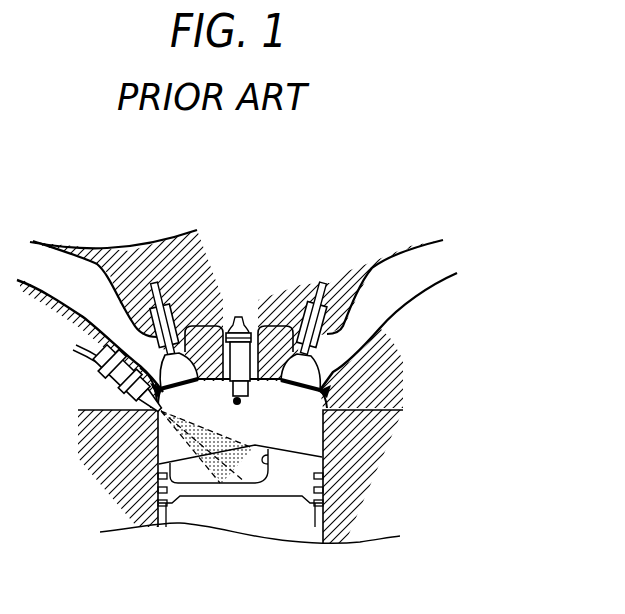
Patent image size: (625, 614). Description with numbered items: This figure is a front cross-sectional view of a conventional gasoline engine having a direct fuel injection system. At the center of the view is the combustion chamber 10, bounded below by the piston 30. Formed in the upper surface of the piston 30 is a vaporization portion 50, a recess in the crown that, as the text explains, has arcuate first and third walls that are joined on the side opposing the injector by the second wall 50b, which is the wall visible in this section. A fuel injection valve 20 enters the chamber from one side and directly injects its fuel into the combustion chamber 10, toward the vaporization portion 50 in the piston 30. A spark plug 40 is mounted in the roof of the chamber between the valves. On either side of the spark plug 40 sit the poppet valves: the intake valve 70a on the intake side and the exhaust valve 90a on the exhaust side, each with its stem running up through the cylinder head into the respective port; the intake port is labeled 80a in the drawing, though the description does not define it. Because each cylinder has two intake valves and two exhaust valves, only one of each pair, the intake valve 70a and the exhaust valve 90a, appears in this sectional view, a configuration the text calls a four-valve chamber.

The combustion chamber 10 is at (140, 460).
The fuel injection valve 20 is at (143, 414).
The piston 30 is at (310, 485).
The spark plug 40 is at (240, 316).
The vaporization portion 50 is at (262, 483).
The second wall 50b is at (265, 452).
The intake valve 70a is at (155, 290).
The intake port 80a is at (50, 253).
The exhaust valve 90a is at (322, 284).